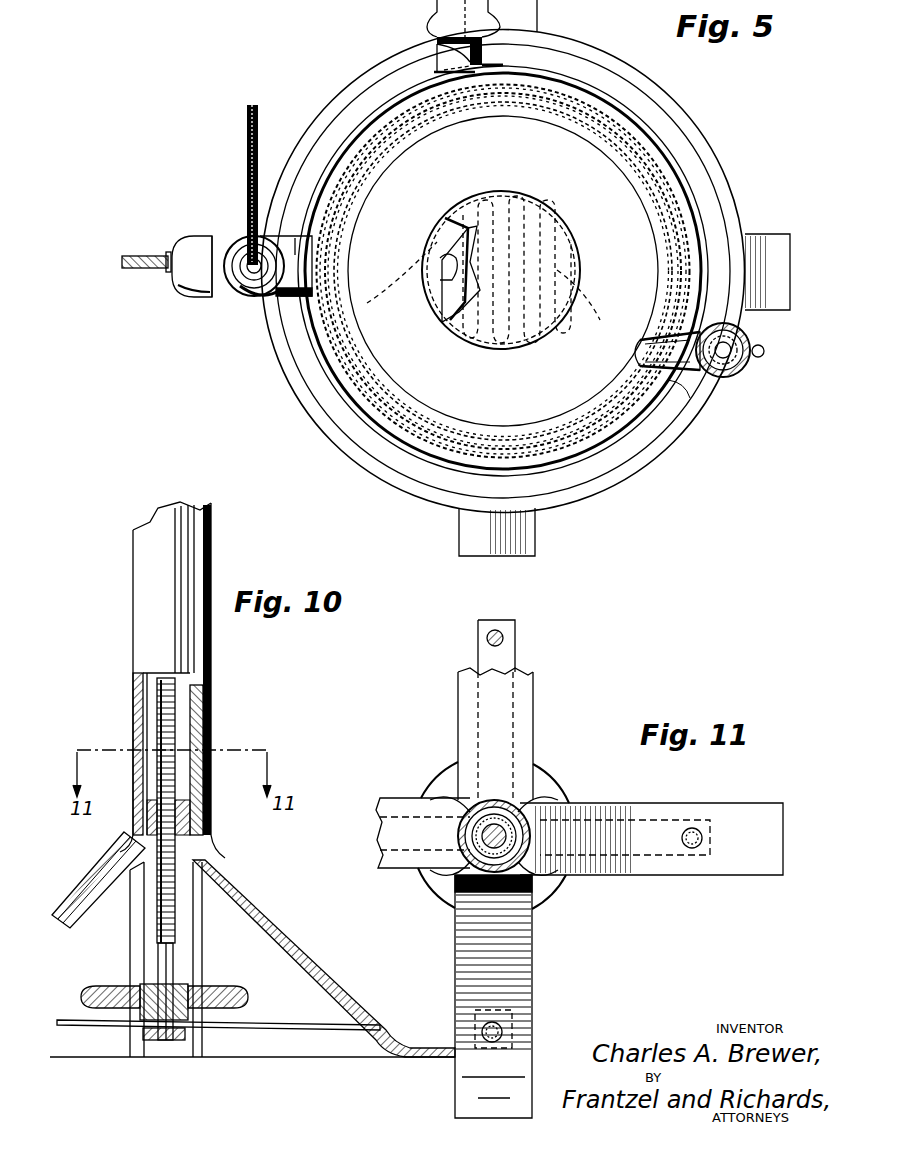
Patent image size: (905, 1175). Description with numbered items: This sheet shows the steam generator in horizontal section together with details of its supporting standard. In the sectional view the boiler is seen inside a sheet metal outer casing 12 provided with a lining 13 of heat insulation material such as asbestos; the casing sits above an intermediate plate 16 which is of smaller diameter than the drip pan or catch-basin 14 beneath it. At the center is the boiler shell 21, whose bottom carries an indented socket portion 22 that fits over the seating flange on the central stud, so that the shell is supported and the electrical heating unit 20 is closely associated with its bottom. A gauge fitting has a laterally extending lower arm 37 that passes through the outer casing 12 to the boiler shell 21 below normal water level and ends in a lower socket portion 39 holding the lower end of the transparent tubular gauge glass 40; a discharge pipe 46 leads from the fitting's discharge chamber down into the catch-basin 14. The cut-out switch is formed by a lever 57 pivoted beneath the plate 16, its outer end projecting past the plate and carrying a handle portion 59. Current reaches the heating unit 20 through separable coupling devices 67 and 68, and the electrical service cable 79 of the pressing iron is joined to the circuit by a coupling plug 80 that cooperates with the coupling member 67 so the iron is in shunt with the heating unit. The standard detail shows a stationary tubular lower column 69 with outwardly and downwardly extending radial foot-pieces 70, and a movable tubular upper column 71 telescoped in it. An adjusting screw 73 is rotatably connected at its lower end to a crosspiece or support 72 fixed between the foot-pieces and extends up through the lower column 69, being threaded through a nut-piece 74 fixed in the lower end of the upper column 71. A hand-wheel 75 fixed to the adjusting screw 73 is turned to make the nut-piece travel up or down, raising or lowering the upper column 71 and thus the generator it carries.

In FIG. 5, the outer casing 12 is at (620, 110).
In FIG. 5, the lining of heat insulation material 13 is at (640, 122).
In FIG. 5, the drip pan or catch-basin 14 is at (350, 117).
In FIG. 5, the intermediate plate 16 is at (572, 90).
In FIG. 5, the electrical heating unit 20 is at (430, 232).
In FIG. 5, the boiler shell 21 is at (655, 170).
In FIG. 5, the indented socket portion 22 is at (545, 203).
In FIG. 5, the lower arm 37 is at (694, 398).
In FIG. 5, the lower socket portion 39 is at (735, 372).
In FIG. 5, the transparent tubular gauge glass 40 is at (748, 338).
In FIG. 5, the discharge pipe 46 is at (766, 356).
In FIG. 5, the lever 57 is at (436, 58).
In FIG. 5, the handle portion 59 is at (425, 15).
In FIG. 5, the coupling member 67 is at (218, 240).
In FIG. 5, the coupling device 68 is at (248, 300).
In FIG. 10, the lower column 69 is at (211, 548).
In FIG. 11, the lower column 69 is at (528, 800).
In FIG. 5, the foot-pieces 70 is at (780, 266).
In FIG. 10, the foot-pieces 70 is at (78, 894).
In FIG. 11, the foot-pieces 70 is at (522, 720).
In FIG. 10, the upper column 71 is at (185, 722).
In FIG. 11, the upper column 71 is at (460, 810).
In FIG. 10, the crosspiece or support 72 is at (300, 1027).
In FIG. 11, the crosspiece or support 72 is at (598, 818).
In FIG. 10, the adjusting screw 73 is at (176, 918).
In FIG. 11, the adjusting screw 73 is at (445, 880).
In FIG. 10, the nut-piece 74 is at (200, 816).
In FIG. 10, the hand-wheel 75 is at (250, 1000).
In FIG. 11, the hand-wheel 75 is at (568, 888).
In FIG. 5, the electrical service cable 79 is at (148, 270).
In FIG. 5, the coupling plug 80 is at (195, 295).